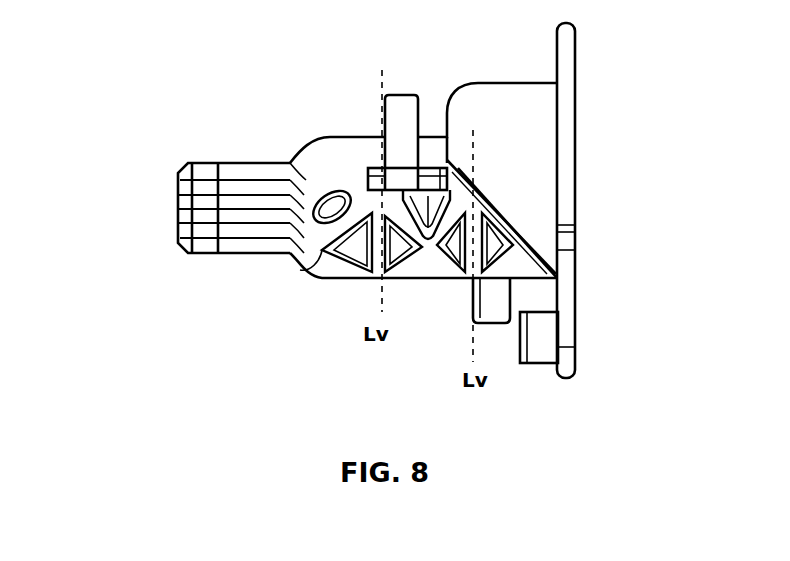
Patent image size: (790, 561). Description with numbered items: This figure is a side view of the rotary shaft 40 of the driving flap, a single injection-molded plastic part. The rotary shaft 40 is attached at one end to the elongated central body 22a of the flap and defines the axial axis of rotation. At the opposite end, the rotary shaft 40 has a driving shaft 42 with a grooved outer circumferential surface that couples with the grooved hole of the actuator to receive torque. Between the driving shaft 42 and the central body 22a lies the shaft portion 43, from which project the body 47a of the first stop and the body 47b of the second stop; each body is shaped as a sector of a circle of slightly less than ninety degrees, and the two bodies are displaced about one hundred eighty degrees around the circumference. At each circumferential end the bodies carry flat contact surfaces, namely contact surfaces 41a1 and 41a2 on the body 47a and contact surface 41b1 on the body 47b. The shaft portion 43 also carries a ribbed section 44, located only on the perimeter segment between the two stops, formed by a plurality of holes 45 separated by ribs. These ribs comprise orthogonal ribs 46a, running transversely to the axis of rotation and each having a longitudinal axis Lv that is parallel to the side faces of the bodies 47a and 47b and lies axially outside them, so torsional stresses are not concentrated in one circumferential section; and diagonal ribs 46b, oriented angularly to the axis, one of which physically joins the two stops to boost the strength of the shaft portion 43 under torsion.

The rotary shaft 40 is at (176, 78).
The driving shaft 42 is at (178, 226).
The shaft portion 43 is at (314, 126).
The ribbed section 44 is at (345, 228).
The holes 45 is at (336, 188).
The orthogonal ribs 46a is at (378, 268).
The diagonal ribs 46b is at (416, 270).
The body of first stop 47a is at (400, 138).
The body of second stop 47b is at (512, 292).
The contact surface 41a1 is at (450, 157).
The contact surface 41a2 is at (404, 130).
The contact surface 41b1 is at (487, 302).
The central body 22a is at (575, 152).